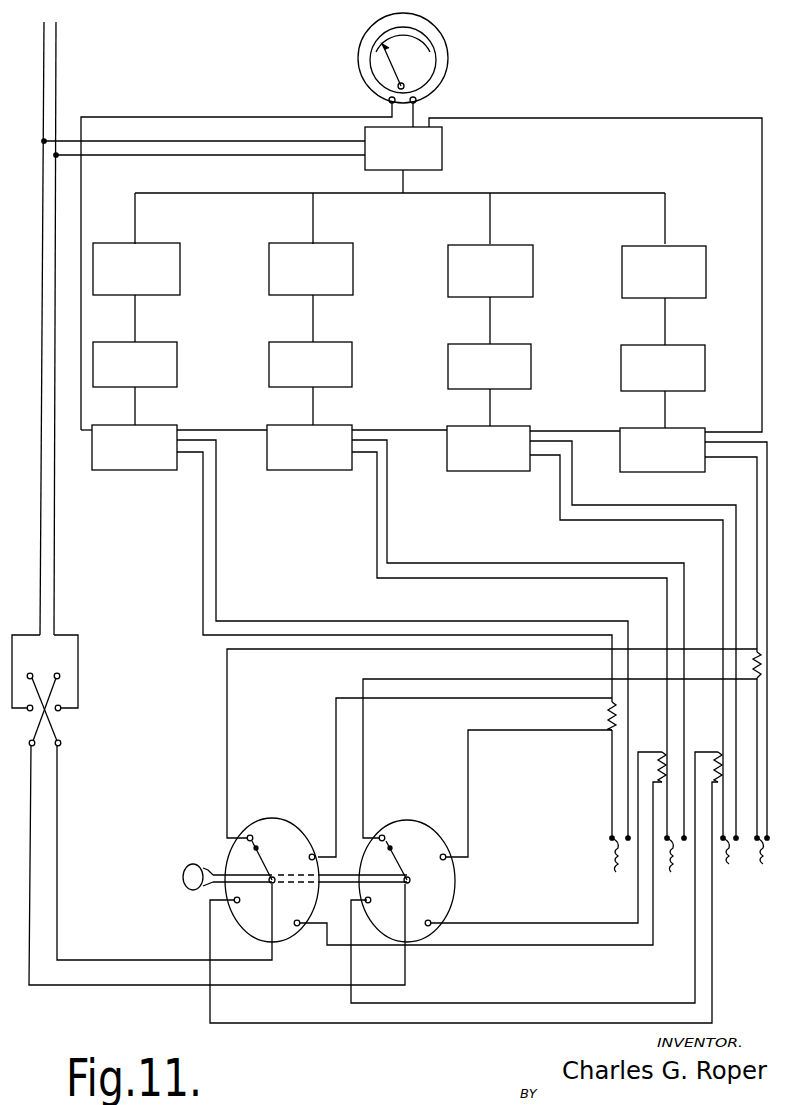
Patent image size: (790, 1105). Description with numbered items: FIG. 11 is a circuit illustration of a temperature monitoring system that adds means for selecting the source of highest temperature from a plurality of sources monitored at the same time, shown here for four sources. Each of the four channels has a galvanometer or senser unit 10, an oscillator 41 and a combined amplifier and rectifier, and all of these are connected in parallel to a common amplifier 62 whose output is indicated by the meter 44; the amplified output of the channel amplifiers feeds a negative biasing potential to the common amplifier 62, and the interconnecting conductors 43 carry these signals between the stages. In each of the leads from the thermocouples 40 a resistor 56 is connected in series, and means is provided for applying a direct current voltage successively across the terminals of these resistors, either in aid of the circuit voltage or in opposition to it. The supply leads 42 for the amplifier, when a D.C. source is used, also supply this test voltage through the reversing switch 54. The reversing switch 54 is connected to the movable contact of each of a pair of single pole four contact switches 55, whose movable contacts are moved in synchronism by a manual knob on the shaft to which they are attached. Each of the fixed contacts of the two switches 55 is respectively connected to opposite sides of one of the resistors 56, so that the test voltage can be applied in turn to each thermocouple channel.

The galvanometer or senser unit 10 is at (147, 470).
The thermocouple 40 is at (684, 866).
The oscillator 41 is at (177, 355).
The supply lead 42 is at (50, 122).
The conductor 43 is at (398, 428).
The meter 44 is at (440, 82).
The reversing switch 54 is at (60, 720).
The single pole four contact switch 55 is at (500, 892).
The resistor 56 is at (608, 714).
The common amplifier 62 is at (442, 165).